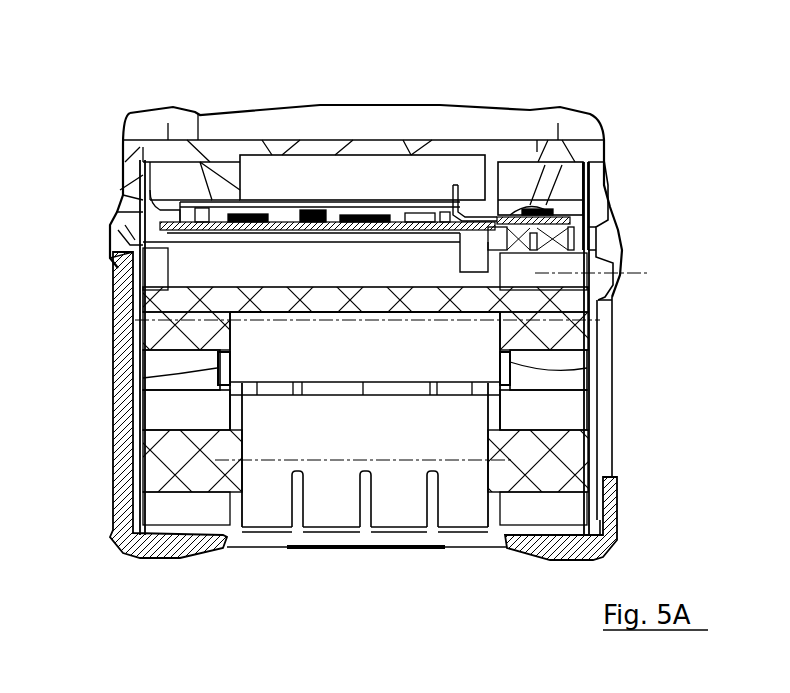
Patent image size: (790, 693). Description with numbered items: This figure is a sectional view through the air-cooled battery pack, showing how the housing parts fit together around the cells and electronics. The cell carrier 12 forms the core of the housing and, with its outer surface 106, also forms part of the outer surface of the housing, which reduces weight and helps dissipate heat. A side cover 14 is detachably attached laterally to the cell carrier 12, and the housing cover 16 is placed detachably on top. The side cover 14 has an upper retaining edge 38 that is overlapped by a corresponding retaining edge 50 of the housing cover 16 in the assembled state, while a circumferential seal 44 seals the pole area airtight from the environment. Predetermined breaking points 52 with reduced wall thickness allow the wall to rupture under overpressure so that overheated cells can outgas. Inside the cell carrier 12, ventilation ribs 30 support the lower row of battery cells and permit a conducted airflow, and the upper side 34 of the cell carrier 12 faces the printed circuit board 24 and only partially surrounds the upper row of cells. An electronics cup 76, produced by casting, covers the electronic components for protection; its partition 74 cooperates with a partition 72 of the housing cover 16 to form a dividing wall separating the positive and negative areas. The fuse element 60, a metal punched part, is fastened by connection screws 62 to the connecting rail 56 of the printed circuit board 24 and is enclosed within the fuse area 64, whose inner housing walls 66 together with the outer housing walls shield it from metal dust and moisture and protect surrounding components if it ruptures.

The cell carrier 12 is at (610, 250).
The side cover 14 is at (118, 357).
The housing cover 16 is at (598, 117).
The printed circuit board 24 is at (362, 215).
The ventilation ribs 30 is at (295, 485).
The upper side 34 is at (451, 215).
The upper retaining edge 38 is at (118, 291).
The circumferential seal 44 is at (117, 210).
The retaining edge 50 is at (118, 241).
The predetermined breaking points 52 is at (143, 381).
The connecting rail 56 is at (458, 183).
The fuse element 60 is at (567, 200).
The connection screws 62 is at (575, 150).
The fuse area 64 is at (522, 194).
The inner housing walls 66 is at (500, 160).
The partition 72 is at (365, 205).
The partition 74 is at (363, 300).
The electronics cup 76 is at (240, 190).
The outer surface 106 is at (403, 556).